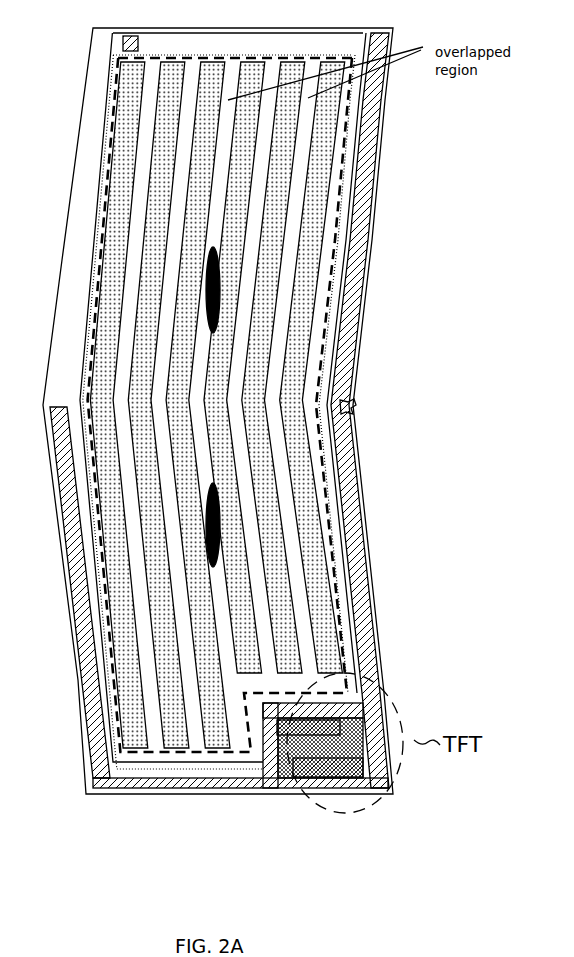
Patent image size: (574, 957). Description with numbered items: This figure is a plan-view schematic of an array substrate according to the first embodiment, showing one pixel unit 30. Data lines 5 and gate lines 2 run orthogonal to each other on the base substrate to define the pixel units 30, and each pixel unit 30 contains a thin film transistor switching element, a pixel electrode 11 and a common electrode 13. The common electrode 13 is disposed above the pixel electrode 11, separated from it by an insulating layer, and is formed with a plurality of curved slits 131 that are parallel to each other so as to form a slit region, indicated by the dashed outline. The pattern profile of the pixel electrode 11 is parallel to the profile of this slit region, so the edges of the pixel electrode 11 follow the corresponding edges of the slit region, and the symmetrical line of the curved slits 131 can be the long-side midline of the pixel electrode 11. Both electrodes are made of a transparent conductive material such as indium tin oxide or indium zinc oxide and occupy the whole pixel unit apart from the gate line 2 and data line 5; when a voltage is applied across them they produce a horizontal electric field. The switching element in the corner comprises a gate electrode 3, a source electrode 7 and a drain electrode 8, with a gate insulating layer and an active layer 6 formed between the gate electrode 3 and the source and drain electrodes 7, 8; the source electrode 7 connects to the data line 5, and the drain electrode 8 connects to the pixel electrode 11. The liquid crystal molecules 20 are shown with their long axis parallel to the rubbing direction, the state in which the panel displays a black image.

The gate line 2 is at (100, 780).
The gate electrode 3 is at (275, 760).
The data line 5 is at (372, 615).
The active layer 6 is at (340, 728).
The source electrode 7 is at (330, 767).
The drain electrode 8 is at (320, 708).
The pixel electrode 11 is at (142, 70).
The common electrode 13 is at (142, 44).
The liquid crystal molecules 20 is at (217, 300).
The pixel unit 30 is at (68, 179).
The slits 131 is at (277, 212).